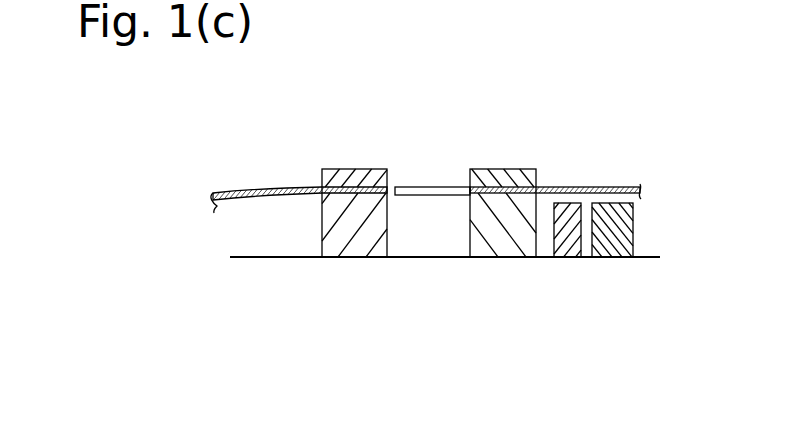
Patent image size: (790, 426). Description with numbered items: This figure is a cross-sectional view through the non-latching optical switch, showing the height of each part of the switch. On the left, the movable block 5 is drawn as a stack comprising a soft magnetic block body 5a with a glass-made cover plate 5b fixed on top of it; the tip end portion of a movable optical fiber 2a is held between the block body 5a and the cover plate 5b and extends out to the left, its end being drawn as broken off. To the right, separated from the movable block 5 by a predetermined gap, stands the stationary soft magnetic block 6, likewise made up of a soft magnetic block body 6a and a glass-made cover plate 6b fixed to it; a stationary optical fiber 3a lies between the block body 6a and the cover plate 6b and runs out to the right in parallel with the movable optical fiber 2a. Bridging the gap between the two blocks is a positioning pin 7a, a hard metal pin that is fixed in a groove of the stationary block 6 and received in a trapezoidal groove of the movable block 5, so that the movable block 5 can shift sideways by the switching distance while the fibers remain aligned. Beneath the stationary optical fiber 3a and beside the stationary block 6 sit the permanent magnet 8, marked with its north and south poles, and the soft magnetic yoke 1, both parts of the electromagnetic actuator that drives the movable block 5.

The soft magnetic yoke 1 is at (617, 253).
The movable optical fiber 2a is at (247, 190).
The stationary optical fiber 3a is at (600, 187).
The movable block 5 is at (342, 209).
The soft magnetic block body 5a is at (355, 247).
The glass-made cover plate 5b is at (345, 175).
The stationary soft magnetic block 6 is at (514, 208).
The soft magnetic block body 6a is at (505, 247).
The glass-made cover plate 6b is at (494, 175).
The positioning pin 7a is at (418, 187).
The permanent magnet 8 is at (563, 253).